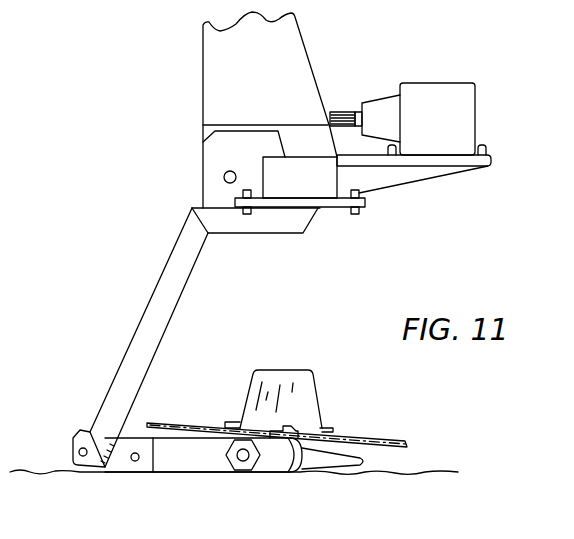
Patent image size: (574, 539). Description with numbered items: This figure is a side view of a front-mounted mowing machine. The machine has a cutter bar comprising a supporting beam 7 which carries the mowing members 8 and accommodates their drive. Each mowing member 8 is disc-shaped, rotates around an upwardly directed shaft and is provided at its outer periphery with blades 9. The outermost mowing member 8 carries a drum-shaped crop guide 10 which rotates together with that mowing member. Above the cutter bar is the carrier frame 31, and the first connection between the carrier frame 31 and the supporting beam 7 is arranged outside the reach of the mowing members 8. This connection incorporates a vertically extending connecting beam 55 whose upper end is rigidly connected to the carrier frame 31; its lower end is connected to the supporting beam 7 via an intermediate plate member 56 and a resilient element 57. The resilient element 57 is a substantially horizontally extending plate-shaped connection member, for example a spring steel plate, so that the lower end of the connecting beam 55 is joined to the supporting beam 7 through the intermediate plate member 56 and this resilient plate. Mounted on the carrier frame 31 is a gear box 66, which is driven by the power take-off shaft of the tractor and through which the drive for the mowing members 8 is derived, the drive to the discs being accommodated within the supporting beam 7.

The gear box 66 is at (447, 90).
The carrier frame 31 is at (322, 183).
The connecting beam 55 is at (173, 252).
The intermediate plate member 56 is at (83, 430).
The resilient element 57 is at (189, 467).
The supporting beam 7 is at (289, 476).
The mowing member 8 is at (350, 428).
The crop guide 10 is at (288, 370).
The blade 9 is at (278, 430).